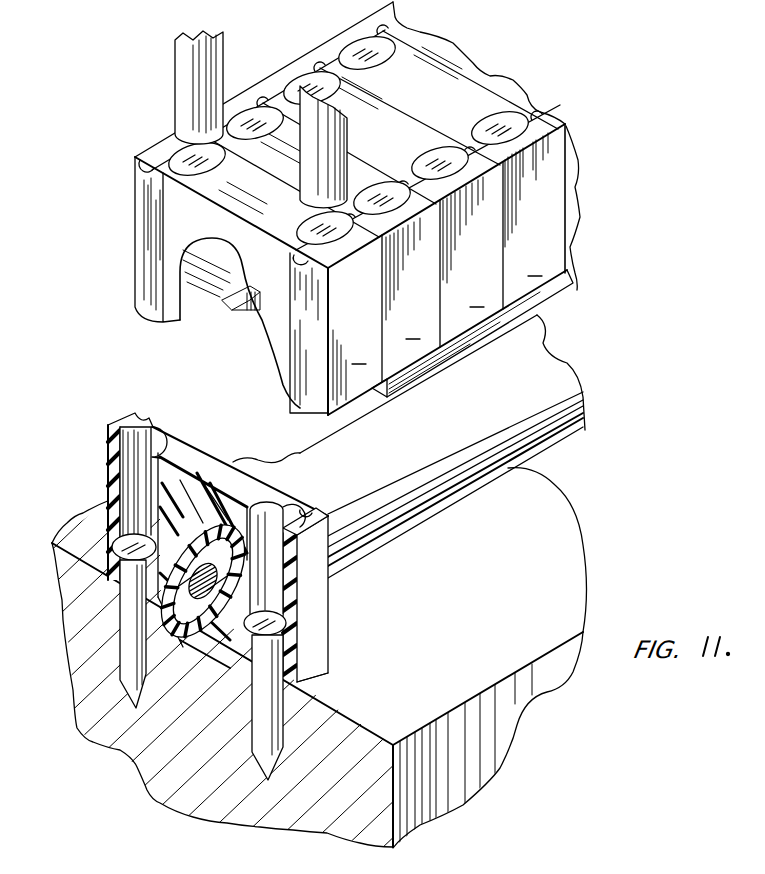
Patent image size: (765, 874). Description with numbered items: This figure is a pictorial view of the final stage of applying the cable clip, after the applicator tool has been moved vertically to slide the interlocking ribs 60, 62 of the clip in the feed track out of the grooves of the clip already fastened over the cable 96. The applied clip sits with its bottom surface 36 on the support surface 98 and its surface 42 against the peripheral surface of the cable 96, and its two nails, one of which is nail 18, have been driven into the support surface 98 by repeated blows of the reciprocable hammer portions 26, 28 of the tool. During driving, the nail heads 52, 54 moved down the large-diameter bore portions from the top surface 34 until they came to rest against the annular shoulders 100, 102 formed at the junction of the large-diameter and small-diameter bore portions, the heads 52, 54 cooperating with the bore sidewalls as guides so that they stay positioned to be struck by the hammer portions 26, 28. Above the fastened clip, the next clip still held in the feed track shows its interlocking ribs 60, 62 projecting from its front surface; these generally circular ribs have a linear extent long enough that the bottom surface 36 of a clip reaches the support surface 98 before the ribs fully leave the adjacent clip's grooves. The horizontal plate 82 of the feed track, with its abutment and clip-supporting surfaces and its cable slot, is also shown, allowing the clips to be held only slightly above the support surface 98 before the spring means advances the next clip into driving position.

The nail 18 is at (123, 635).
The hammer portion 26 is at (176, 61).
The hammer portion 28 is at (342, 144).
The top surface 34 is at (184, 447).
The bottom surface 36 is at (318, 680).
The surface 42 is at (190, 478).
The head 52 is at (127, 537).
The head 54 is at (285, 632).
The interlocking rib 60 is at (150, 216).
The interlocking rib 62 is at (302, 305).
The horizontal plate 82 is at (555, 286).
The cable 96 is at (210, 633).
The support surface 98 is at (186, 783).
The annular shoulder 100 is at (123, 544).
The annular shoulder 102 is at (298, 666).